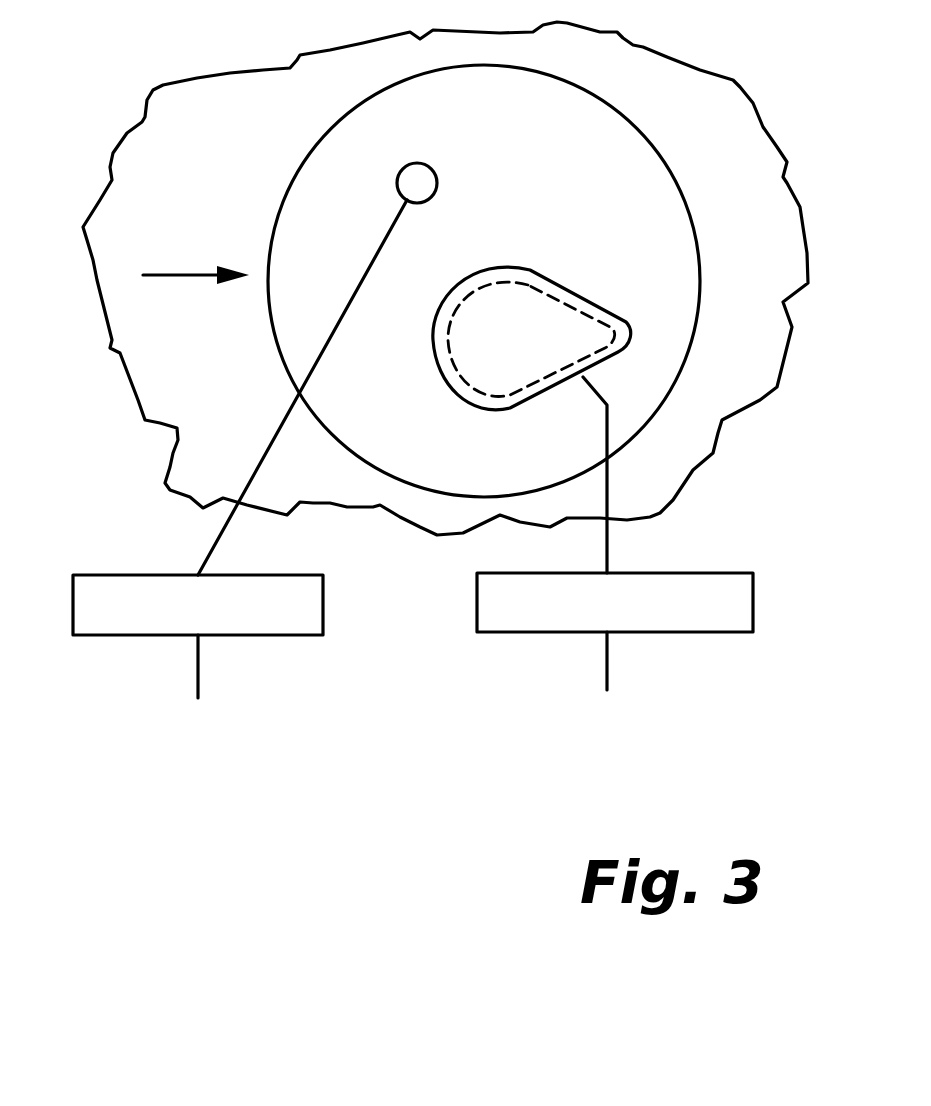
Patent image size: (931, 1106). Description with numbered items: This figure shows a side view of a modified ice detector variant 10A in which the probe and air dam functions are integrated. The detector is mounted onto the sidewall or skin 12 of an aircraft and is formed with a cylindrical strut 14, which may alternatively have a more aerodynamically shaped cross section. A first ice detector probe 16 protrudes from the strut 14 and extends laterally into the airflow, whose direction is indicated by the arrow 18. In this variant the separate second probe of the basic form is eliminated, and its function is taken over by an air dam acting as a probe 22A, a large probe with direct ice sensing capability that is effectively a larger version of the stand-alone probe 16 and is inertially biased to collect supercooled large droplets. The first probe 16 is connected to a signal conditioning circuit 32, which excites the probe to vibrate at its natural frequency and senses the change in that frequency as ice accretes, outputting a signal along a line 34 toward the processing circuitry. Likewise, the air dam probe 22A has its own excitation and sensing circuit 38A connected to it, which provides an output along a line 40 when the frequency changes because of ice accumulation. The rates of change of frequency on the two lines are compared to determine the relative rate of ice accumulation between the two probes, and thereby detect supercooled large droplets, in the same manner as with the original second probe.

The ice detector variant 10A is at (280, 181).
The skin 12 is at (718, 437).
The cylindrical strut 14 is at (693, 337).
The first ice detector probe 16 is at (437, 190).
The arrow 18 is at (185, 280).
The air dam acting as a probe 22A is at (523, 268).
The signal conditioning circuit 32 is at (108, 575).
The line 34 is at (198, 658).
The excitation and sensing circuit 38A is at (693, 573).
The line 40 is at (607, 653).